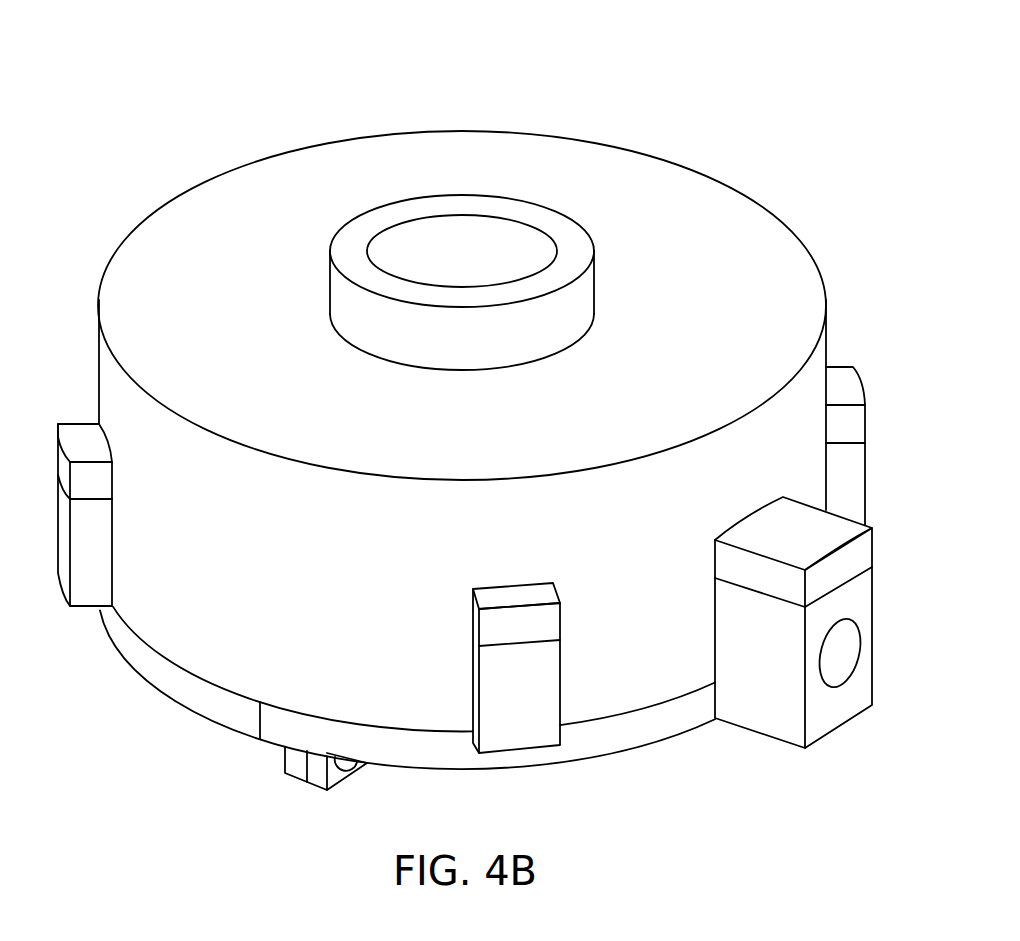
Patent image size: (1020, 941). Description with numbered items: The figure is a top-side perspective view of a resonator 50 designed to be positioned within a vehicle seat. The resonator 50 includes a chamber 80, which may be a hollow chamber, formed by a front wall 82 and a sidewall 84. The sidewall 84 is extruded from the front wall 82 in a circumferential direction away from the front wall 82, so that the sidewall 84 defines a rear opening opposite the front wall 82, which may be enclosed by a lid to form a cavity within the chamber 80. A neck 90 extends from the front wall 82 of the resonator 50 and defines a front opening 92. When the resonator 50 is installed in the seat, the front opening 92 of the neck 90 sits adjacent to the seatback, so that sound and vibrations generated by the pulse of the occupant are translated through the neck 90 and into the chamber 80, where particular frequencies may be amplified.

The resonator 50 is at (461, 403).
The chamber 80 is at (814, 396).
The front wall 82 is at (225, 172).
The sidewall 84 is at (110, 382).
The neck 90 is at (466, 265).
The front opening 92 is at (443, 235).